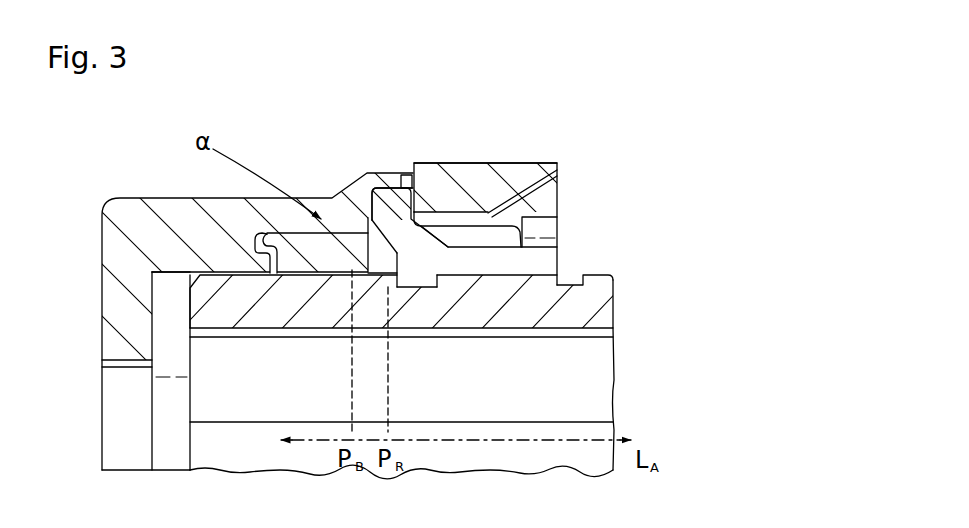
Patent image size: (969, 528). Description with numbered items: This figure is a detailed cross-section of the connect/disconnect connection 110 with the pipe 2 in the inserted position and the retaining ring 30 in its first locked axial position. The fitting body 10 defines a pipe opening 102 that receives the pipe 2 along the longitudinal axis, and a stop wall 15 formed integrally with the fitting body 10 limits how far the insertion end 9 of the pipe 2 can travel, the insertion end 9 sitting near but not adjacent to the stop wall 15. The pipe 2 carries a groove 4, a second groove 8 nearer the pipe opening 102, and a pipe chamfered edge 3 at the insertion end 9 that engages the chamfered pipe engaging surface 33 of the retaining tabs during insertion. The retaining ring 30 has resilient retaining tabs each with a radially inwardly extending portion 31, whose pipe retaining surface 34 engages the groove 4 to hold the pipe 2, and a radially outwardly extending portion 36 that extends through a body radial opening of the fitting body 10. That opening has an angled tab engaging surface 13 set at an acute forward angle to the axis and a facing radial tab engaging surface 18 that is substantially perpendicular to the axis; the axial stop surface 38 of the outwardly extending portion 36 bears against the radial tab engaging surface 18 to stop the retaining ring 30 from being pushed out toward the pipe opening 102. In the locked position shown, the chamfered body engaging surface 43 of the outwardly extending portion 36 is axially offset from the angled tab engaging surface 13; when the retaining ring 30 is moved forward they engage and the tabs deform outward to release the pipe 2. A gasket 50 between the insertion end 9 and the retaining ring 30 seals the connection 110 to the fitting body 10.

The pipe 2 is at (599, 298).
The pipe chamfered edge 3 is at (186, 274).
The groove 4 is at (420, 302).
The second groove 8 is at (581, 270).
The insertion end 9 is at (182, 302).
The fitting body 10 is at (350, 163).
The angled tab engaging surface 13 is at (346, 202).
The stop wall 15 is at (122, 330).
The radial tab engaging surface 18 is at (419, 166).
The retaining ring 30 is at (559, 246).
The radially inwardly extending portion 31 is at (388, 274).
The chamfered pipe engaging surface 33 is at (438, 279).
The pipe retaining surface 34 is at (388, 283).
The radially outwardly extending portion 36 is at (403, 174).
The axial stop surface 38 is at (423, 199).
The chamfered body engaging surface 43 is at (381, 231).
The gasket 50 is at (246, 237).
The pipe opening 102 is at (563, 217).
The connection 110 is at (520, 156).